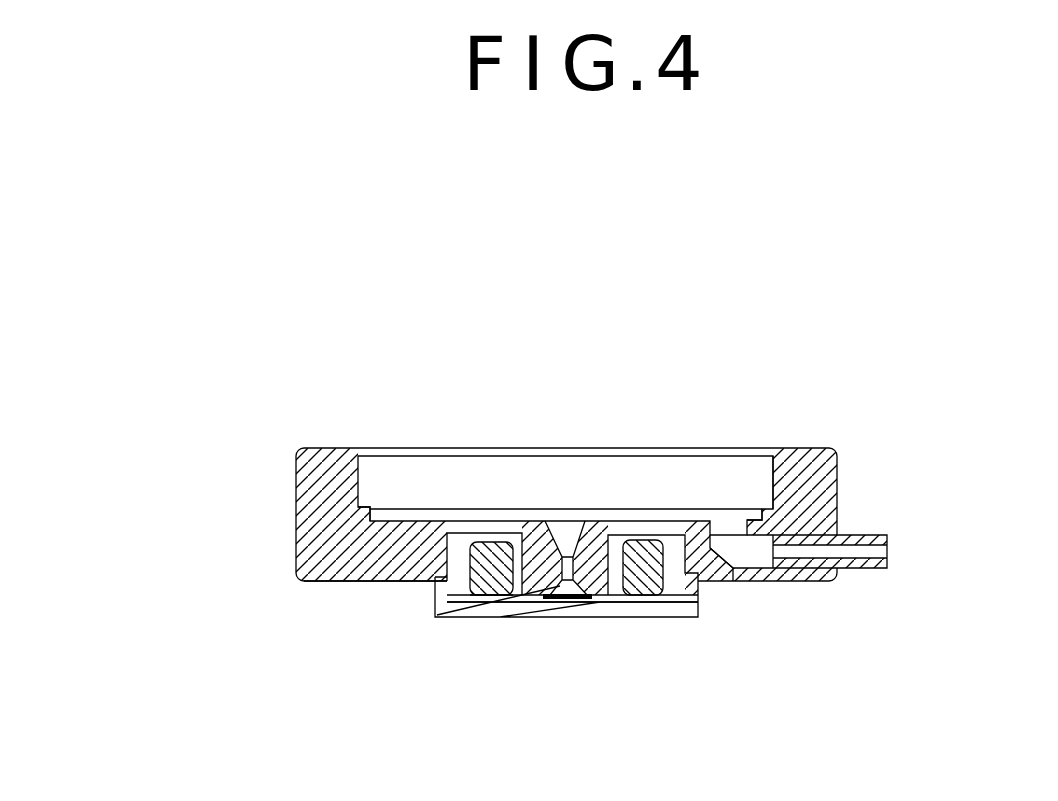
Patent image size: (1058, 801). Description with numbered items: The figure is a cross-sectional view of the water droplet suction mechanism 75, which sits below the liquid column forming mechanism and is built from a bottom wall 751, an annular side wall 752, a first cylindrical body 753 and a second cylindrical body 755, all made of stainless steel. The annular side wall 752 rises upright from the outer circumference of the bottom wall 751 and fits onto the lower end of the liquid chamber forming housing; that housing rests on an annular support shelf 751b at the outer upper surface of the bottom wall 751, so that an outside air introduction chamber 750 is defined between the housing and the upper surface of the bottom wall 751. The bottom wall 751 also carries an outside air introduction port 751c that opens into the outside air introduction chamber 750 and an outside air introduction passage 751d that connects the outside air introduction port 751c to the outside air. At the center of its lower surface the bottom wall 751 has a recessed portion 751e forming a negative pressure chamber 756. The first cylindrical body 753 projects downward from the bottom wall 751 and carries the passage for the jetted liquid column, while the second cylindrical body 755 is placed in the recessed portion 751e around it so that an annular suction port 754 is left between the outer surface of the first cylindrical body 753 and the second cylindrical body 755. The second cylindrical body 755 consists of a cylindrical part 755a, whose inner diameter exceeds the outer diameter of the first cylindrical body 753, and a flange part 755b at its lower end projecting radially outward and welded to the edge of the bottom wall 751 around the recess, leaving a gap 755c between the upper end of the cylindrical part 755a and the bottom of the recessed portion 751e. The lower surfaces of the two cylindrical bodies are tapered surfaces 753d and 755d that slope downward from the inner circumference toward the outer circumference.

The water droplet suction mechanism 75 is at (253, 498).
The outside air introduction chamber 750 is at (681, 514).
The bottom wall 751 is at (363, 542).
The annular support shelf 751b is at (373, 506).
The outside air introduction port 751c is at (732, 525).
The outside air introduction passage 751d is at (860, 560).
The recessed portion 751e is at (358, 583).
The annular side wall 752 is at (838, 484).
The first cylindrical body 753 is at (600, 603).
The tapered surface 753d is at (540, 600).
The annular suction port 754 is at (511, 585).
The second cylindrical body 755 is at (700, 617).
The cylindrical part 755a is at (497, 540).
The flange part 755b is at (433, 604).
The gap 755c is at (640, 540).
The tapered surface 755d is at (488, 596).
The negative pressure chamber 756 is at (723, 572).